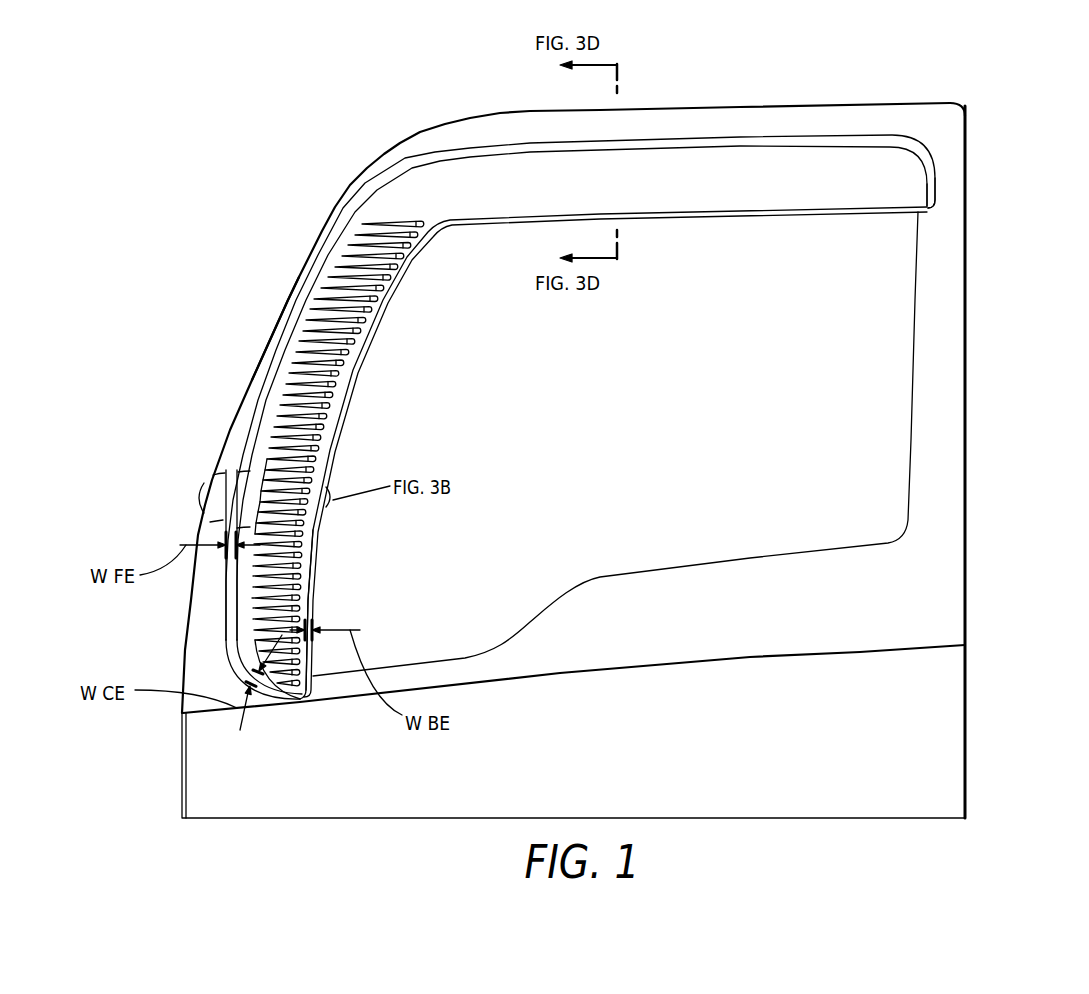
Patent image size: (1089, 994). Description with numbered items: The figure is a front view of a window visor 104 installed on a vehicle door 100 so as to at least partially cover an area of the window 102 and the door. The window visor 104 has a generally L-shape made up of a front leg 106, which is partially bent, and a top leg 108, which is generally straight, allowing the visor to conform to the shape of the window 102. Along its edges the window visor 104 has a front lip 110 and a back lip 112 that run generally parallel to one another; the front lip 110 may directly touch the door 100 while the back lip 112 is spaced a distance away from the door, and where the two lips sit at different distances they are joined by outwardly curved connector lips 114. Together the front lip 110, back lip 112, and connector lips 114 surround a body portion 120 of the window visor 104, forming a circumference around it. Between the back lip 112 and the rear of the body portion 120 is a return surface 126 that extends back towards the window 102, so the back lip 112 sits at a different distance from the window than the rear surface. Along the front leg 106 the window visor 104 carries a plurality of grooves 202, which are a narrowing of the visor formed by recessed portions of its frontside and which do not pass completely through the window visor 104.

The vehicle door 100 is at (888, 608).
The window 102 is at (863, 362).
The window visor 104 is at (332, 209).
The front leg 106 is at (262, 457).
The top leg 108 is at (653, 175).
The front lip 110 is at (283, 323).
The back lip 112 is at (393, 280).
The connector lips 114 is at (930, 176).
The body portion 120 is at (246, 588).
The return surface 126 is at (308, 556).
The grooves 202 is at (330, 377).